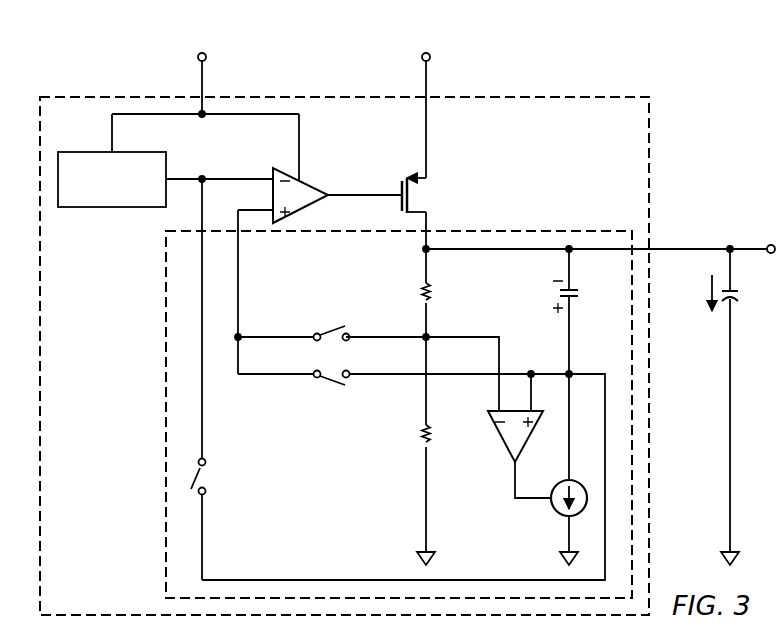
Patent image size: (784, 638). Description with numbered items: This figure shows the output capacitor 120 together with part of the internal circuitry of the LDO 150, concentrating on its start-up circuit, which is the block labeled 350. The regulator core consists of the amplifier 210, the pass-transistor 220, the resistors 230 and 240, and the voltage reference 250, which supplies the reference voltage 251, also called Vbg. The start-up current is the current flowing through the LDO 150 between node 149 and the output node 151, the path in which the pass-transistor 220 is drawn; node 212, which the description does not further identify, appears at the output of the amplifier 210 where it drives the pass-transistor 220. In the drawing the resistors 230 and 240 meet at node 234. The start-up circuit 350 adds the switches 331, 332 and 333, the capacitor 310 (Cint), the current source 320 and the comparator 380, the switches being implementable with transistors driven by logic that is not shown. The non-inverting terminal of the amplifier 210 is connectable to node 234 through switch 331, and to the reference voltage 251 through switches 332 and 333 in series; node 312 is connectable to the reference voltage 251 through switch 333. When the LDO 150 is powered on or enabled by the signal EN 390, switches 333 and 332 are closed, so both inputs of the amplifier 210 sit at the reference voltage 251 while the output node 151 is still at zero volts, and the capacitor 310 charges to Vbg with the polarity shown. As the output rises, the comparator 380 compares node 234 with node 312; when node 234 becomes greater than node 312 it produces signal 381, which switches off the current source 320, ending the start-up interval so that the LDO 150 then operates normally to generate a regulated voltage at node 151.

The output capacitor 120 is at (736, 303).
The node 149 is at (431, 57).
The LDO 150 is at (549, 95).
The output node 151 is at (688, 247).
The amplifier 210 is at (315, 183).
The amplifier output node 212 is at (364, 193).
The pass-transistor 220 is at (401, 204).
The resistor 230 is at (421, 296).
The node 234 is at (429, 335).
The resistor 240 is at (421, 431).
The voltage reference 250 is at (108, 208).
The voltage 251 is at (238, 178).
The capacitor 310 is at (574, 303).
The node 312 is at (565, 372).
The current source 320 is at (556, 514).
The switch 331 is at (333, 328).
The switch 332 is at (331, 386).
The switch 333 is at (208, 477).
The start-up circuit 350 is at (526, 229).
The comparator 380 is at (500, 437).
The signal 381 is at (513, 481).
The signal EN 390 is at (198, 56).